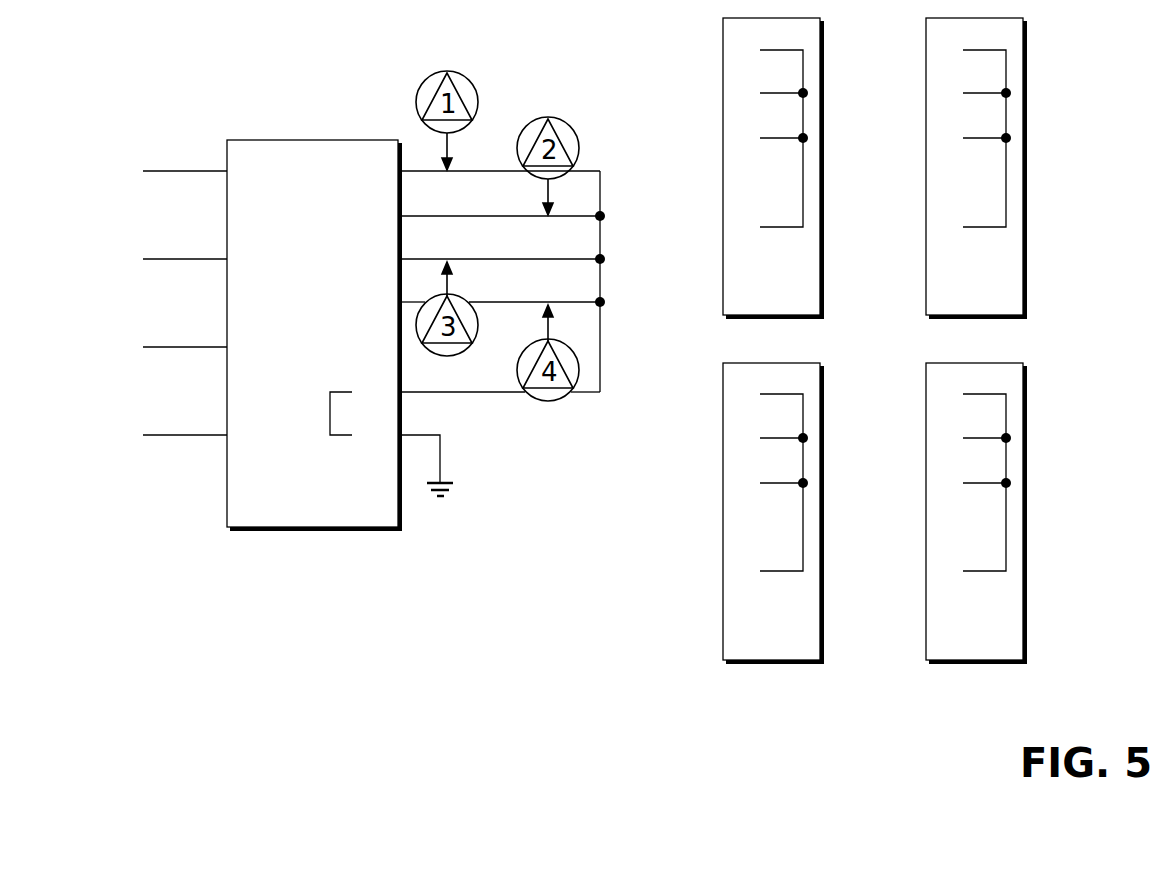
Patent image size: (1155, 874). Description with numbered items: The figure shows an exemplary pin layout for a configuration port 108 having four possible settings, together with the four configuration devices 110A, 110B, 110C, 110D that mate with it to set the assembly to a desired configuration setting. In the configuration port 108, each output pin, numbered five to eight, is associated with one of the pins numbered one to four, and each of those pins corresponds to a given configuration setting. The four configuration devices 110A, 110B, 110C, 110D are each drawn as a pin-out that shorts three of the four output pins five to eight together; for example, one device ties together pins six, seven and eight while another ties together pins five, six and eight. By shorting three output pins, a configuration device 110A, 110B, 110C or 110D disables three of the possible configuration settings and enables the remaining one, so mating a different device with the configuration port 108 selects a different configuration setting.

The configuration port 108 is at (272, 334).
The configuration device 110A is at (773, 167).
The configuration device 110B is at (773, 512).
The configuration device 110C is at (976, 167).
The configuration device 110D is at (976, 512).